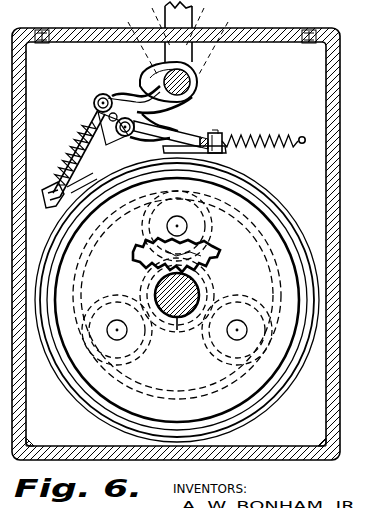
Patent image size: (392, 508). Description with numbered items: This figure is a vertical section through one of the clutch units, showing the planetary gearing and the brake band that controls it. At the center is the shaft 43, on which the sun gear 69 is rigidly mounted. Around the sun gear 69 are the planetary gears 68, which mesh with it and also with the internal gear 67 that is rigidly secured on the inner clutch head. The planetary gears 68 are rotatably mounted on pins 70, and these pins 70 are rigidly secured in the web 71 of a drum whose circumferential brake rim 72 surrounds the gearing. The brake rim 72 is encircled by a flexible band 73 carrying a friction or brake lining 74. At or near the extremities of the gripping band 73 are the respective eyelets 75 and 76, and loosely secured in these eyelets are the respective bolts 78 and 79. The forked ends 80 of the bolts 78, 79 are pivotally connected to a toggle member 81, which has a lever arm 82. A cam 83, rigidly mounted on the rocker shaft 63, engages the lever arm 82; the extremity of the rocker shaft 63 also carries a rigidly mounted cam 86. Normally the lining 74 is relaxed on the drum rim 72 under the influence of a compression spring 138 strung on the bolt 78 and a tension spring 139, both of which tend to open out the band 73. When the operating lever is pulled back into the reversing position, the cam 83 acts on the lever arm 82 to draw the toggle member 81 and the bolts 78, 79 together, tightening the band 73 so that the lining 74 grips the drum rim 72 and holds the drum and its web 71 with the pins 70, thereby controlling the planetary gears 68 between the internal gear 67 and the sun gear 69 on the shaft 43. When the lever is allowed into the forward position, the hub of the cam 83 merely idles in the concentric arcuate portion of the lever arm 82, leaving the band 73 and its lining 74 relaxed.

The cam 86 is at (203, 38).
The brake lining 74 is at (269, 191).
The cam 83 is at (147, 77).
The rocker shaft 63 is at (199, 80).
The lever arm 82 is at (140, 89).
The toggle member 81 is at (113, 105).
The forked ends 80 is at (94, 108).
The bolt 78 is at (90, 116).
The compression spring 138 is at (63, 156).
The eyelet 75 is at (50, 188).
The bolt 79 is at (190, 137).
The eyelet 76 is at (224, 136).
The tension spring 139 is at (280, 131).
The flexible band 73 is at (246, 163).
The brake rim 72 is at (279, 215).
The internal gear 67 is at (85, 260).
The pins 70 is at (188, 223).
The planetary gears 68 is at (207, 253).
The web 71 is at (195, 295).
The sun gear 69 is at (197, 300).
The shaft 43 is at (178, 330).